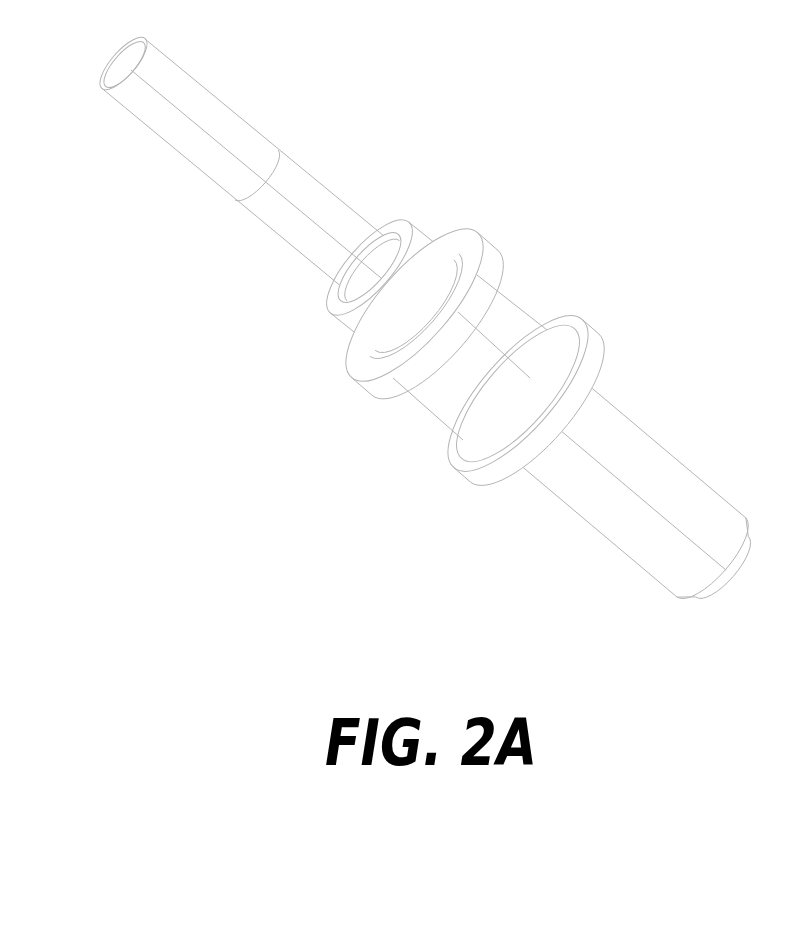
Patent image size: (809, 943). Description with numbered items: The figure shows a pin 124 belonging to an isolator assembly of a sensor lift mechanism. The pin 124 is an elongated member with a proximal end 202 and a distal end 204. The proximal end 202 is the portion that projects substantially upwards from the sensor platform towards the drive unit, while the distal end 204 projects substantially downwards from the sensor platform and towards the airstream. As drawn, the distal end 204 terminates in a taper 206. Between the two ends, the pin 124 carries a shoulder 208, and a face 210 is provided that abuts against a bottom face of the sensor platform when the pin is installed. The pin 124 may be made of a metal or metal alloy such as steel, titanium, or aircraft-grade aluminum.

The pin 124 is at (449, 347).
The proximal end 202 is at (178, 220).
The distal end 204 is at (664, 526).
The taper 206 is at (743, 540).
The shoulder 208 is at (595, 363).
The face 210 is at (478, 240).